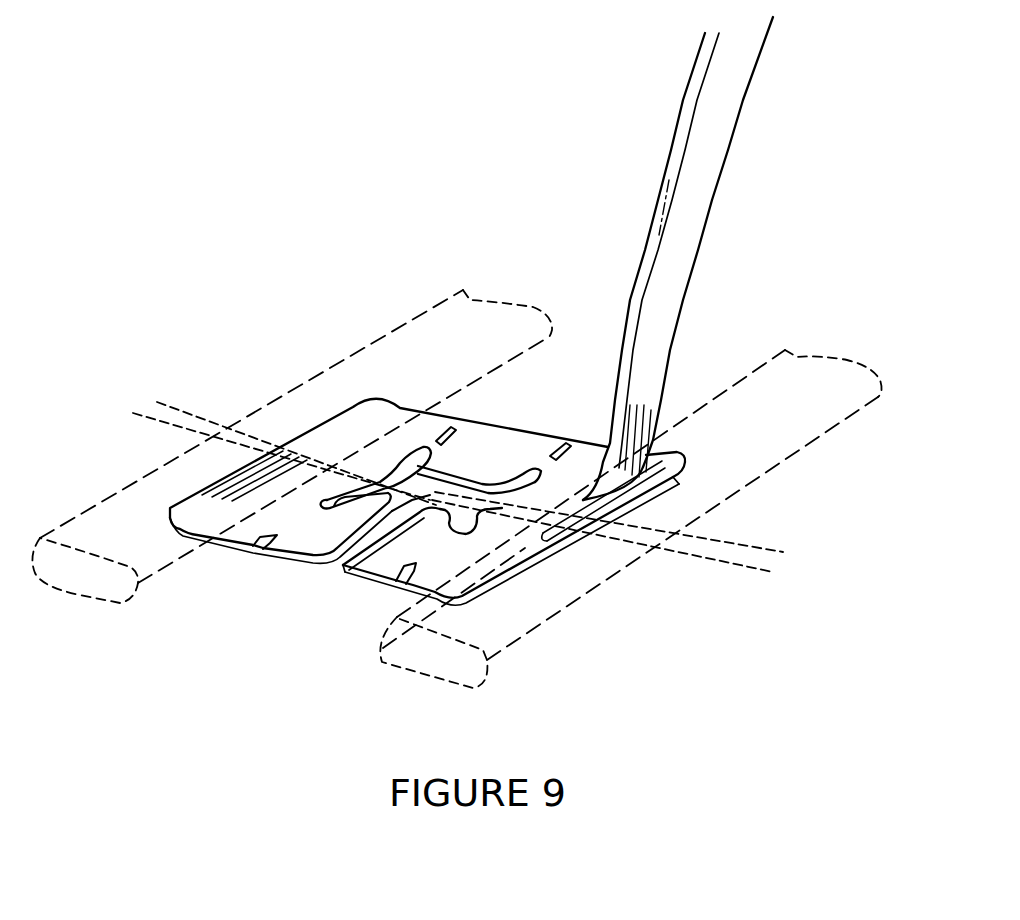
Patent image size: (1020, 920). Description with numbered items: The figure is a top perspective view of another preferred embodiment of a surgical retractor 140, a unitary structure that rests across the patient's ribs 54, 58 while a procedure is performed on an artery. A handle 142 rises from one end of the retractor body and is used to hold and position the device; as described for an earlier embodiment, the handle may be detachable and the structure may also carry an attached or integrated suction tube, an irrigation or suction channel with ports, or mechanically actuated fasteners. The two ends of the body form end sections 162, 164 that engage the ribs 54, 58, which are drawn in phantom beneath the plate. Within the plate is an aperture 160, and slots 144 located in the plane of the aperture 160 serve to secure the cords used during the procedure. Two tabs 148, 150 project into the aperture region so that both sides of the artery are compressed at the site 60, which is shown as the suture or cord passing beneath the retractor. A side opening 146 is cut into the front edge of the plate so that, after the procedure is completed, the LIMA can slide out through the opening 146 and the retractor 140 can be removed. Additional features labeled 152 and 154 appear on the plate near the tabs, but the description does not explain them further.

The retractor 140 is at (363, 248).
The handle 142 is at (723, 152).
The slots 144 is at (259, 556).
The side opening 146 is at (331, 562).
The tab 148 is at (382, 438).
The tab 150 is at (472, 530).
The slot 152 is at (322, 484).
The bent tab 154 is at (423, 453).
The aperture 160 is at (424, 505).
The end section 162 is at (675, 478).
The end section 164 is at (307, 437).
The site 60 is at (434, 495).
The rib 58 is at (83, 577).
The rib 54 is at (410, 660).